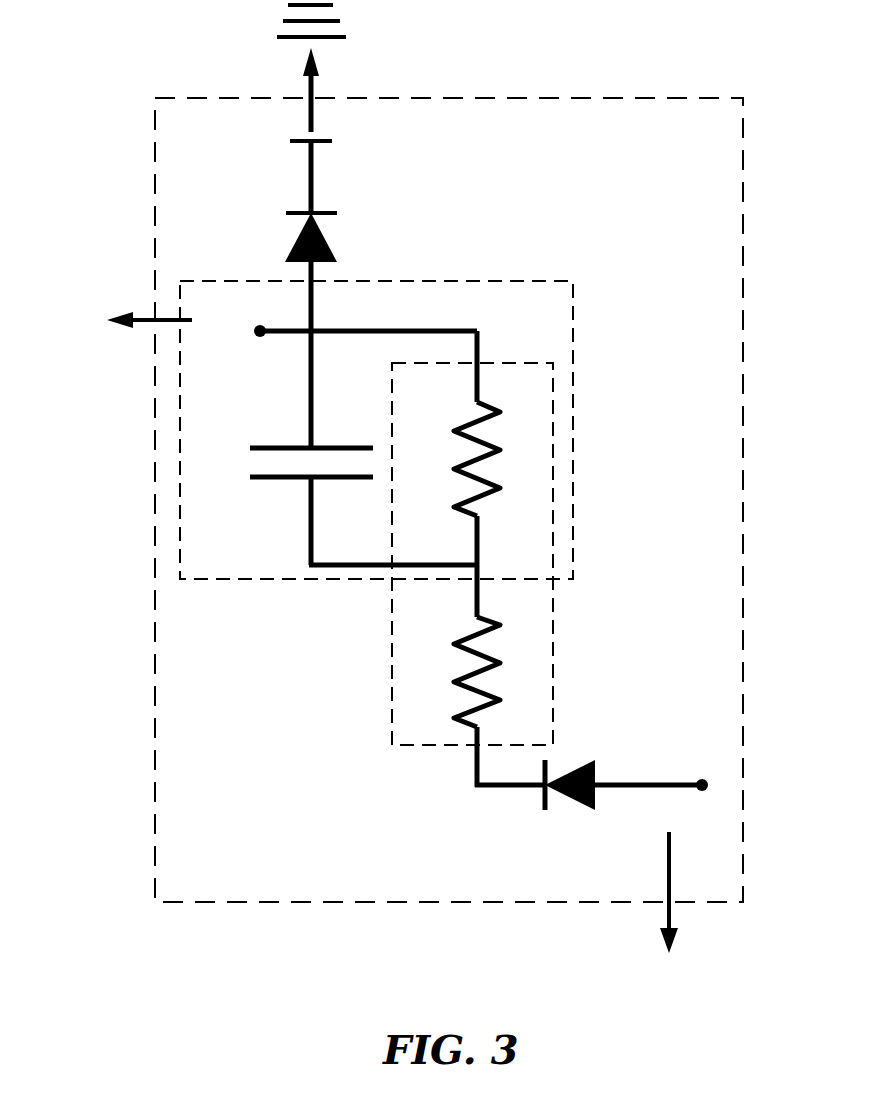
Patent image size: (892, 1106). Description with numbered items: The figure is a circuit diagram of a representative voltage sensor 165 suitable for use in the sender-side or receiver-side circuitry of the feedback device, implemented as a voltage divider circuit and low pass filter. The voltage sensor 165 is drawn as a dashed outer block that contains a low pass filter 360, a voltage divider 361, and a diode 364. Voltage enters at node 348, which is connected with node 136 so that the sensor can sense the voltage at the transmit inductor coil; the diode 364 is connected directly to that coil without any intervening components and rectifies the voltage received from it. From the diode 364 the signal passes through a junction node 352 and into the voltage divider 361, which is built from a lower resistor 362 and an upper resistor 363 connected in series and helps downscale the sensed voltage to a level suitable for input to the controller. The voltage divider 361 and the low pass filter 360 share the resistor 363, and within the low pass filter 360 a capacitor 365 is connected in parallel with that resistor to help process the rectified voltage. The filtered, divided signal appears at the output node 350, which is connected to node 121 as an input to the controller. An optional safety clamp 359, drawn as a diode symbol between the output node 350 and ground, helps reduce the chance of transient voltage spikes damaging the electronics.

The node 121 is at (130, 323).
The node 136 is at (672, 909).
The voltage sensor 165 is at (155, 735).
The node 348 is at (702, 790).
The node 350 is at (258, 330).
The junction node 352 is at (472, 787).
The safety clamp 359 is at (313, 203).
The low pass filter 360 is at (573, 307).
The voltage divider 361 is at (392, 735).
The resistor 362 is at (495, 622).
The resistor 363 is at (498, 412).
The diode 364 is at (575, 765).
The capacitor 365 is at (287, 446).